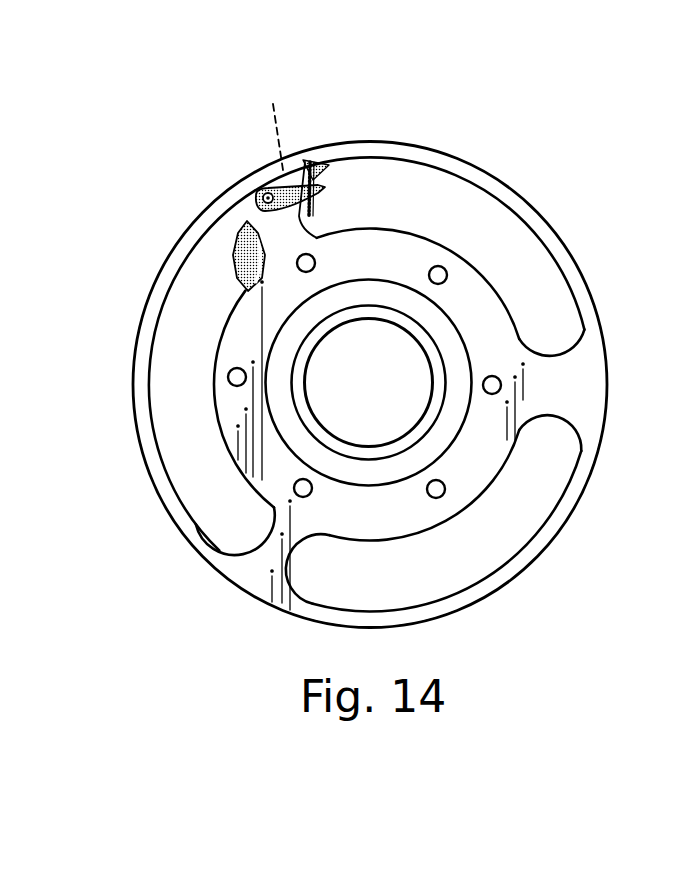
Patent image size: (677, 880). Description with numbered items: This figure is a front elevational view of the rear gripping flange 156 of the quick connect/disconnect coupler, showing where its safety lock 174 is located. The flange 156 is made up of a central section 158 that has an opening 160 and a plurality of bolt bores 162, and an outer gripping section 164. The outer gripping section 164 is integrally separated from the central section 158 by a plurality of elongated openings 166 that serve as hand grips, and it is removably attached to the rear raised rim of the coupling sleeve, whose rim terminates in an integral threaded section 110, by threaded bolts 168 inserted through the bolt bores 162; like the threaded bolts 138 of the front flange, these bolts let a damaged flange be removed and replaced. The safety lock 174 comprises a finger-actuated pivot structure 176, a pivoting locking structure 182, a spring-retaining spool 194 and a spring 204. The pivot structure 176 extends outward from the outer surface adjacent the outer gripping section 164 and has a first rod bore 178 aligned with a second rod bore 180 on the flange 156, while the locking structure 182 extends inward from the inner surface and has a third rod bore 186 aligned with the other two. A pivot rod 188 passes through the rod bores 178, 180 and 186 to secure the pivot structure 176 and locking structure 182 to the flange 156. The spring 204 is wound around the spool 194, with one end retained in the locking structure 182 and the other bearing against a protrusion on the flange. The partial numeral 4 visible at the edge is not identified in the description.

The integral threaded section 110 is at (404, 385).
The rear gripping flange 156 is at (534, 177).
The central section 158 is at (463, 297).
The opening 160 is at (463, 346).
The bolt bores 162 is at (452, 405).
The threaded bolts 168 is at (445, 491).
The outer gripping section 164 is at (578, 482).
The elongated openings 166 is at (443, 210).
The safety lock 174 is at (162, 190).
The finger-actuated pivot structure 176 is at (356, 156).
The first rod bore 178 is at (162, 220).
The second rod bore 180 is at (162, 220).
The third rod bore 186 is at (258, 208).
The pivoting locking structure 182 is at (237, 261).
The pivot rod 188 is at (264, 196).
The spring-retaining spool 194 is at (257, 122).
The spring 204 is at (323, 167).
The partial label 4 is at (7, 455).
The threaded bolts 138 is at (22, 542).